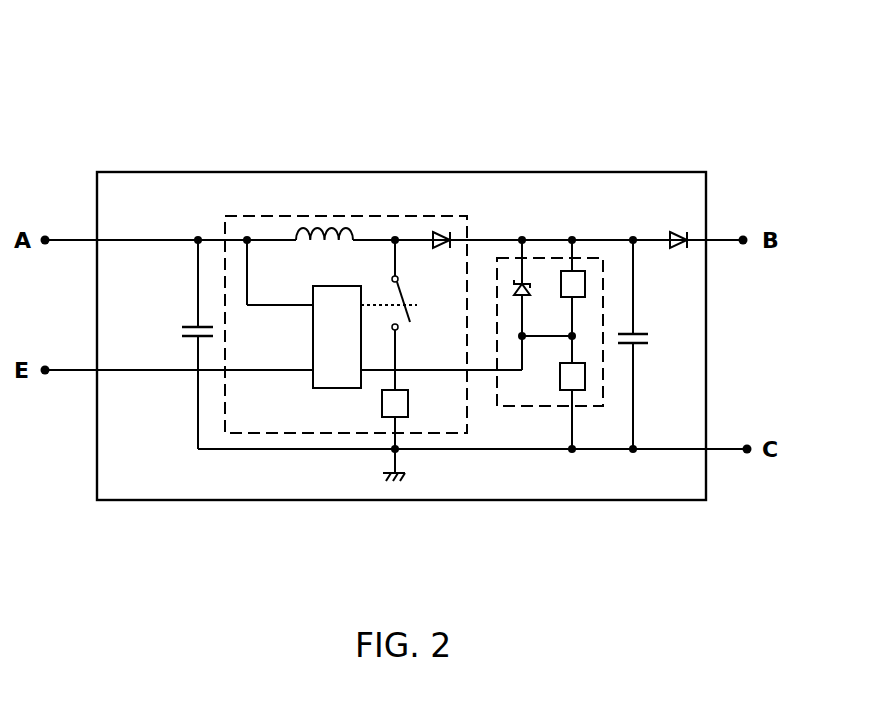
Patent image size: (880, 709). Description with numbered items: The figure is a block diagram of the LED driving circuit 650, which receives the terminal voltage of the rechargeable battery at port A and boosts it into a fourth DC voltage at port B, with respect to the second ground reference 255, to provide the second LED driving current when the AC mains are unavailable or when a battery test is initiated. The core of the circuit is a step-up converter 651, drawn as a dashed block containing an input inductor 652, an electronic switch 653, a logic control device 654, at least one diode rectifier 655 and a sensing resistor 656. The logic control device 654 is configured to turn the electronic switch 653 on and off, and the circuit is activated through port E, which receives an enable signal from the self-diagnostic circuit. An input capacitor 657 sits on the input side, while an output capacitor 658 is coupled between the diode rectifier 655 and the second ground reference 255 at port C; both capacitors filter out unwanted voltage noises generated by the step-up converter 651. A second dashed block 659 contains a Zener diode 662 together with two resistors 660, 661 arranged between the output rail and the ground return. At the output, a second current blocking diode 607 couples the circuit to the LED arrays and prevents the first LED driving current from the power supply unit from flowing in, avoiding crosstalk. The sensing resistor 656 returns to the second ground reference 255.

The LED driving circuit 650 is at (392, 163).
The step-up converter 651 is at (300, 445).
The input inductor 652 is at (321, 216).
The electronic switch 653 is at (410, 320).
The logic control device 654 is at (312, 286).
The diode rectifier 655 is at (445, 232).
The sensing resistor 656 is at (408, 416).
The input capacitor 657 is at (190, 337).
The output capacitor 658 is at (643, 333).
The voltage divider circuit 659 is at (616, 395).
The resistor 660 is at (588, 271).
The resistor 661 is at (582, 392).
The Zener diode 662 is at (523, 282).
The second current blocking diode 607 is at (678, 238).
The second ground reference 255 is at (390, 485).